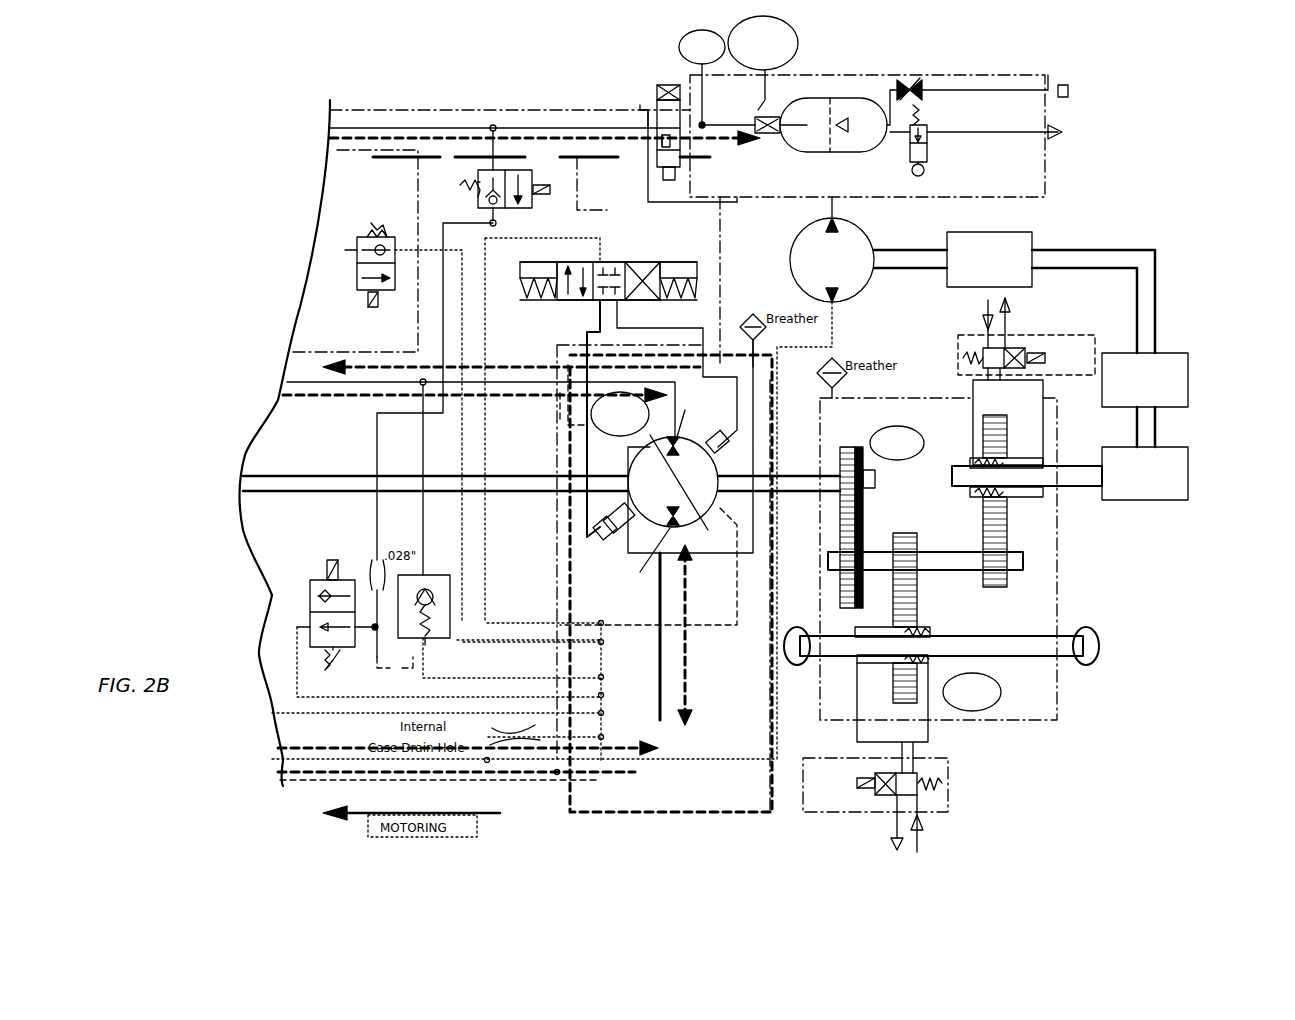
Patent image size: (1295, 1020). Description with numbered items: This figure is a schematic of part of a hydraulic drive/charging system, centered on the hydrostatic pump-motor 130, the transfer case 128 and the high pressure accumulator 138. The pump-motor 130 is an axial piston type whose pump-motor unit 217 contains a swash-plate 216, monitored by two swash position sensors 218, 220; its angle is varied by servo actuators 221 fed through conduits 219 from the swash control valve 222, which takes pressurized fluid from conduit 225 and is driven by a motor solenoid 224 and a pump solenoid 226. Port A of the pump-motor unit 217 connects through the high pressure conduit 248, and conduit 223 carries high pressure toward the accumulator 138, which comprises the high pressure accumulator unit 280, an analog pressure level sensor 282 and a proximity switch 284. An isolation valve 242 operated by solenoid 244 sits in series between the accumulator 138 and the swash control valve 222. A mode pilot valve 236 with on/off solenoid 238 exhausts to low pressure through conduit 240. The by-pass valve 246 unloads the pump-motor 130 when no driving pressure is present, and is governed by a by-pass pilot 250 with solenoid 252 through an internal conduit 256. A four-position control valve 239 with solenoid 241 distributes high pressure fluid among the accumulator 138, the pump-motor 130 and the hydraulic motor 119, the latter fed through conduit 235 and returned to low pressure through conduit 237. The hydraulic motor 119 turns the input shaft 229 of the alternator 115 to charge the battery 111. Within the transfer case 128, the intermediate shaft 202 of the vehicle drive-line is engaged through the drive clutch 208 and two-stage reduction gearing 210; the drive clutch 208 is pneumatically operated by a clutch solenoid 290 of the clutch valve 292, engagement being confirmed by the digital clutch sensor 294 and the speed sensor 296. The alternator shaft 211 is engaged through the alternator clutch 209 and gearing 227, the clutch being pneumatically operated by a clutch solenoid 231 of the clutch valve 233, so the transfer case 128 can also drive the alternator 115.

The battery 111 is at (1190, 360).
The alternator 115 is at (1037, 232).
The hydraulic motor 119 is at (868, 242).
The transfer case 128 is at (920, 398).
The hydrostatic pump-motor 130 is at (620, 820).
The high pressure accumulator 138 is at (937, 72).
The intermediate shaft 202 is at (830, 658).
The drive clutch 208 is at (925, 628).
The alternator clutch 209 is at (975, 495).
The gearing 210 is at (869, 546).
The alternator shaft 211 is at (1080, 487).
The swash-plate 216 is at (678, 478).
The pump-motor unit 217 is at (693, 520).
The swash position sensor 218 is at (592, 423).
The conduits 219 is at (735, 305).
The swash position sensor 220 is at (548, 412).
The servo actuators 221 is at (727, 444).
The swash control valve 222 is at (638, 262).
The conduit 223 is at (578, 110).
The motor solenoid 224 is at (537, 263).
The conduit 225 is at (612, 262).
The pump solenoid 226 is at (700, 278).
The gearing 227 is at (1018, 533).
The input shaft 229 is at (895, 270).
The clutch solenoid 231 is at (1040, 362).
The clutch valve 233 is at (1093, 338).
The conduit 235 is at (737, 202).
The mode pilot valve 236 is at (363, 200).
The conduit 237 is at (780, 547).
The on/off solenoid 238 is at (373, 308).
The control valve 239 is at (653, 100).
The conduit 240 is at (433, 248).
The solenoid 241 is at (682, 170).
The isolation valve 242 is at (513, 170).
The solenoid 244 is at (542, 173).
The by-pass valve 246 is at (450, 585).
The conduit 248 is at (508, 380).
The by-pass pilot 250 is at (322, 580).
The solenoid 252 is at (328, 563).
The internal conduit 256 is at (385, 667).
The high pressure accumulator unit 280 is at (850, 97).
The pressure level sensor 282 is at (682, 38).
The high pressure accumulator proximity switch 284 is at (797, 27).
The clutch solenoid 290 is at (858, 790).
The clutch valve 292 is at (815, 808).
The clutch sensor 294 is at (995, 710).
The speed sensor 296 is at (918, 436).